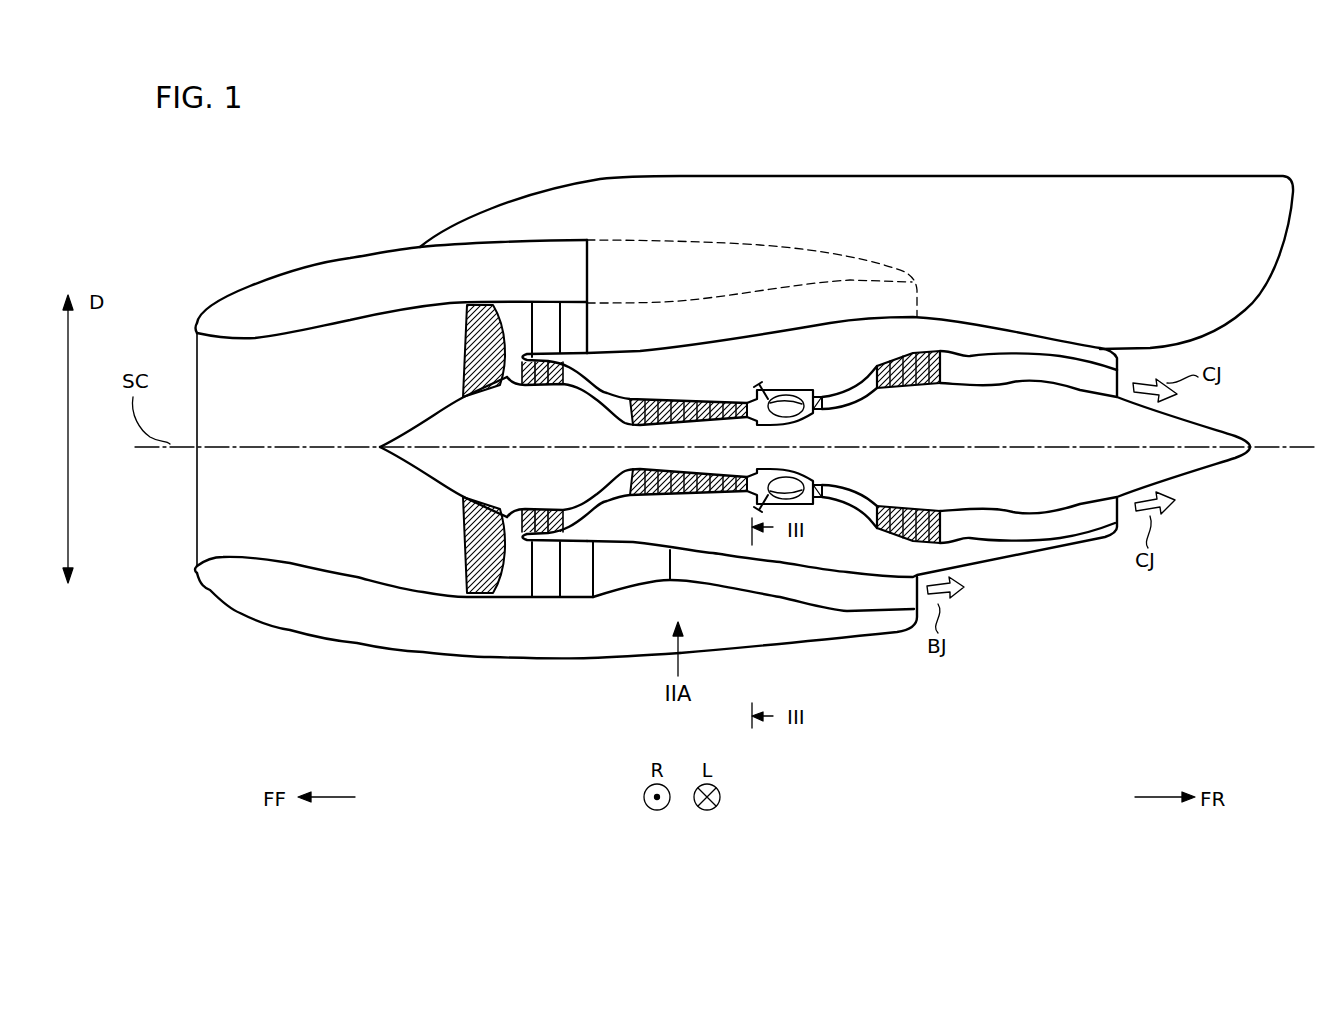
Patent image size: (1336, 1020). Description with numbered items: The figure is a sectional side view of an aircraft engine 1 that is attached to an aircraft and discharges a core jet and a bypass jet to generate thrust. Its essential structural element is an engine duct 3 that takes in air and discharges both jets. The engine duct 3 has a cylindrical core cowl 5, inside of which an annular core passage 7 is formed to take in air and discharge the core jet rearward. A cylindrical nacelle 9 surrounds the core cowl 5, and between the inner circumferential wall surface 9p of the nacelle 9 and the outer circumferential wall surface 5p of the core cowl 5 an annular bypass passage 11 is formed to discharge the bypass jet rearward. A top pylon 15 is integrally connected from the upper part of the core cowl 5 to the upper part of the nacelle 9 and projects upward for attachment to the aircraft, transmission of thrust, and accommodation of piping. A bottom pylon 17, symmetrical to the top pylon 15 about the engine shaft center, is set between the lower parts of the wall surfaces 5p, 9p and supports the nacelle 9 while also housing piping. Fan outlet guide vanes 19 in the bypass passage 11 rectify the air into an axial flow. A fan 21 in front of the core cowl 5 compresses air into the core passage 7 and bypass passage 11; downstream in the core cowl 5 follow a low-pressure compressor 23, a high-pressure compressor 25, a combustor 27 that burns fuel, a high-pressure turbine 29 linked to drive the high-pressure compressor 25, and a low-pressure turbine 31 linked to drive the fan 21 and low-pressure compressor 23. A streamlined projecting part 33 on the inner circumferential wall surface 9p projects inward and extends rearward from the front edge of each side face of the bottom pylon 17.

The aircraft engine 1 is at (718, 131).
The engine duct 3 is at (346, 247).
The core cowl 5 is at (765, 335).
The outer circumferential wall surface of the core cowl 5p is at (827, 577).
The core passage 7 is at (597, 492).
The nacelle 9 is at (377, 648).
The inner circumferential wall surface of the nacelle 9p is at (581, 590).
The bypass passage 11 is at (802, 598).
The top pylon 15 is at (929, 176).
The bottom pylon 17 is at (637, 552).
The fan outlet guide vanes 19 is at (540, 312).
The fan 21 is at (462, 345).
The low-pressure compressor 23 is at (520, 392).
The high-pressure compressor 25 is at (655, 398).
The combustor 27 is at (797, 398).
The high-pressure turbine 29 is at (824, 396).
The low-pressure turbine 31 is at (919, 349).
The projecting part 33 is at (697, 582).